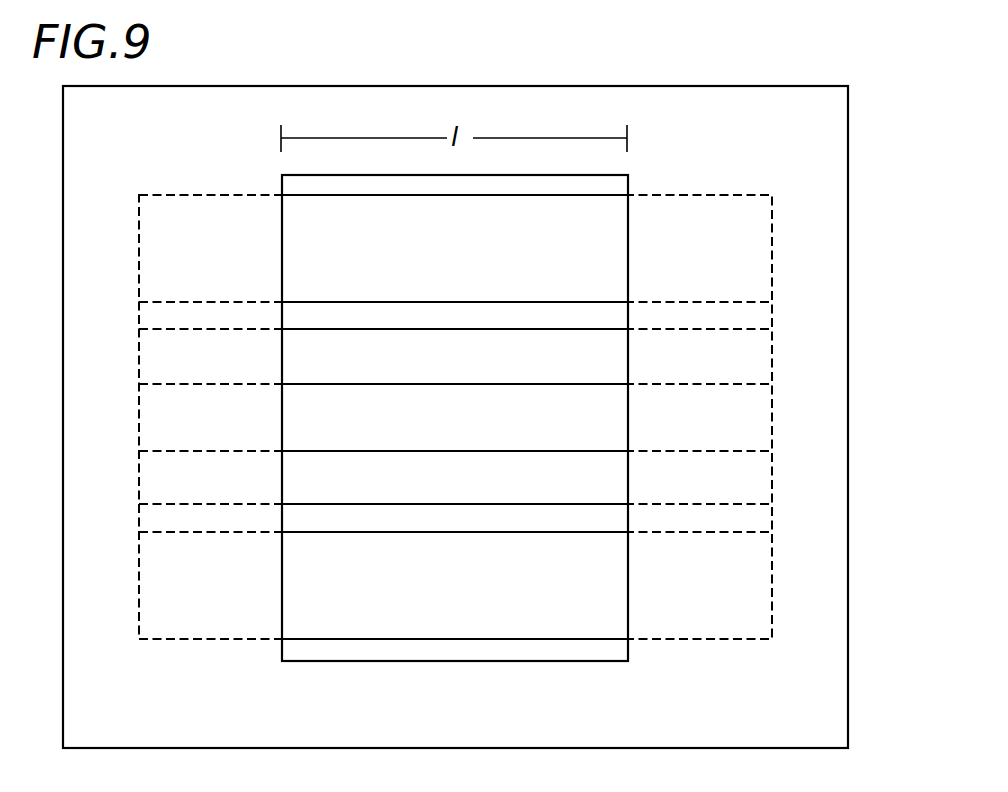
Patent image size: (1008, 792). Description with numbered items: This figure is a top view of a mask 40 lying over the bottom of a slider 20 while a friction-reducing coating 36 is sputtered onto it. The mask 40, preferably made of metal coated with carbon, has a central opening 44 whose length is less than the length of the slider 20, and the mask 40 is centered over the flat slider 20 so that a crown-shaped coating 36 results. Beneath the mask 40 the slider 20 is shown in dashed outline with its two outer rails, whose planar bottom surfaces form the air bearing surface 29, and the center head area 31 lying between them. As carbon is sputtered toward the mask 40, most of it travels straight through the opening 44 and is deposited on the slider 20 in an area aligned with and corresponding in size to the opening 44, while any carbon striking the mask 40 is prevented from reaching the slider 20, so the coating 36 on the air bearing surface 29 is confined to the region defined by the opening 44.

The slider 20 is at (713, 178).
The air bearing surface 29 is at (628, 260).
The center head area 31 is at (310, 427).
The coating 36 is at (601, 368).
The mask 40 is at (190, 106).
The central opening 44 is at (305, 175).